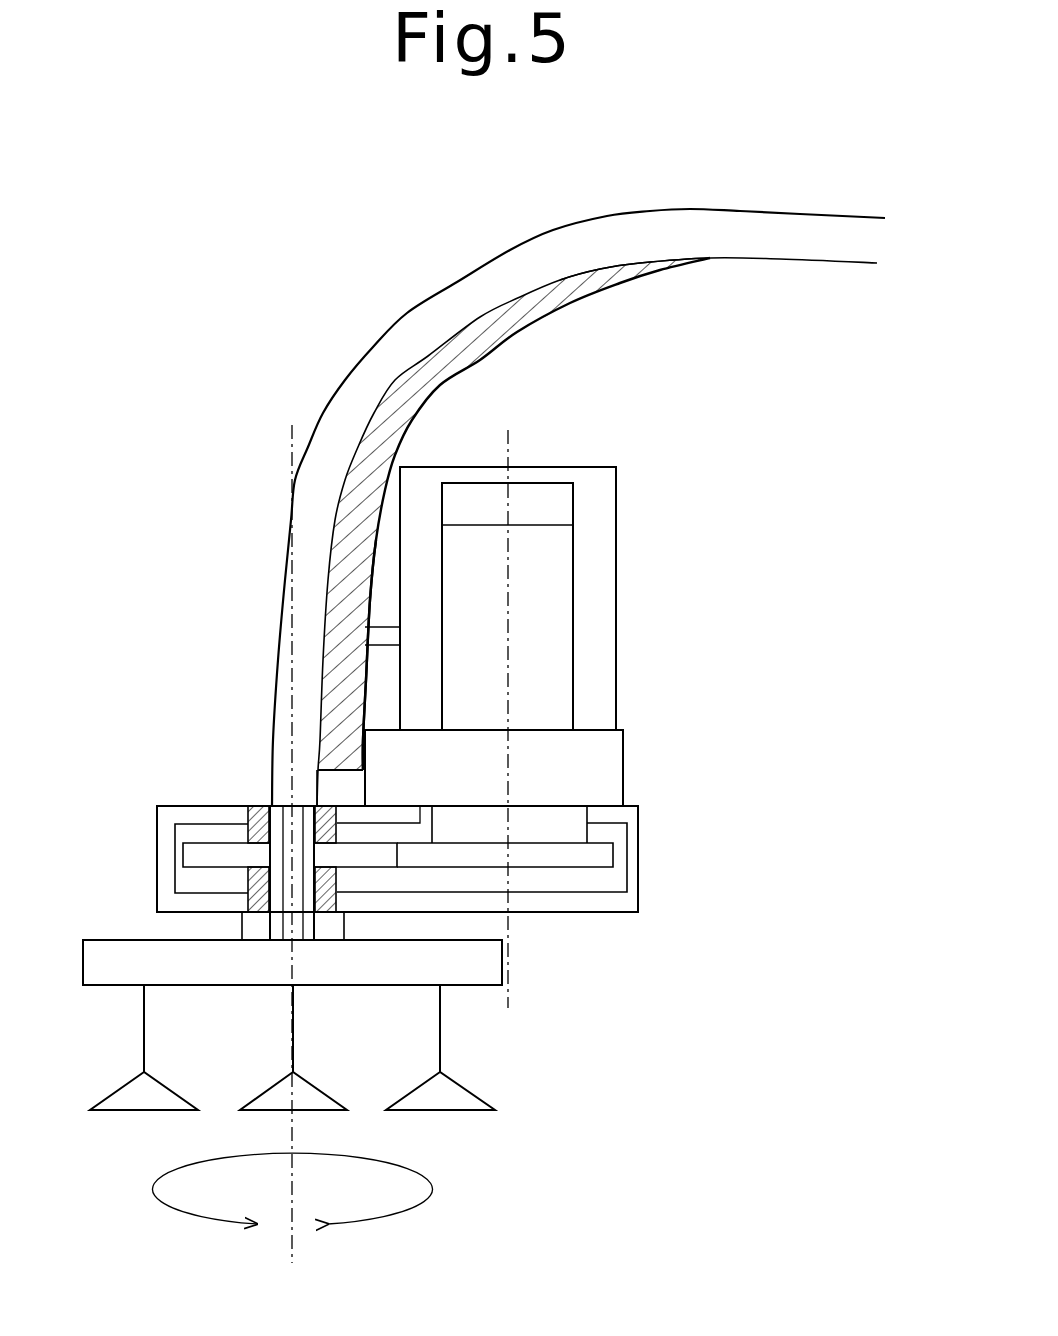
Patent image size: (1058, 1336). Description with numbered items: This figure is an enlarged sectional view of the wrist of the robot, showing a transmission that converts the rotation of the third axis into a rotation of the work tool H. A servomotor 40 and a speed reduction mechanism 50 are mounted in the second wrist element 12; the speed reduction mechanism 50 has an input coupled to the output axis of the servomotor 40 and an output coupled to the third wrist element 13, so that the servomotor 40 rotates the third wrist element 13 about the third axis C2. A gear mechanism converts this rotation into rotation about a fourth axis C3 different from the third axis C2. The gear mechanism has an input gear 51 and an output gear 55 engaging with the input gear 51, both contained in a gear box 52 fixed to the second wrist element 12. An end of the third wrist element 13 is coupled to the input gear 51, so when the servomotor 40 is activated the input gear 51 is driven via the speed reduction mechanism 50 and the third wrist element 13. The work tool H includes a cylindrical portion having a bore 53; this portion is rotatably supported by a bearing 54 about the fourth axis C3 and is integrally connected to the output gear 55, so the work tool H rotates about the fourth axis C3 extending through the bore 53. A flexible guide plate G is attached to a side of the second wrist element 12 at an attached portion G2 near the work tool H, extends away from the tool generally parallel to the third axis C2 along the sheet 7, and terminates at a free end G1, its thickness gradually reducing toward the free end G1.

The glass sheet 7 is at (608, 217).
The guide plate G is at (518, 339).
The free end G1 is at (681, 272).
The attached portion G2 is at (365, 637).
The third axis C2 is at (503, 696).
The fourth axis C3 is at (293, 867).
The second wrist element 12 is at (597, 680).
The servomotor 40 is at (547, 590).
The speed reduction mechanism 50 is at (590, 770).
The gear box 52 is at (557, 912).
The third wrist element 13 is at (572, 825).
The output gear 55 is at (197, 857).
The input gear 51 is at (585, 852).
The bearing 54 is at (252, 806).
The bore 53 is at (289, 795).
The work tool H is at (513, 1122).